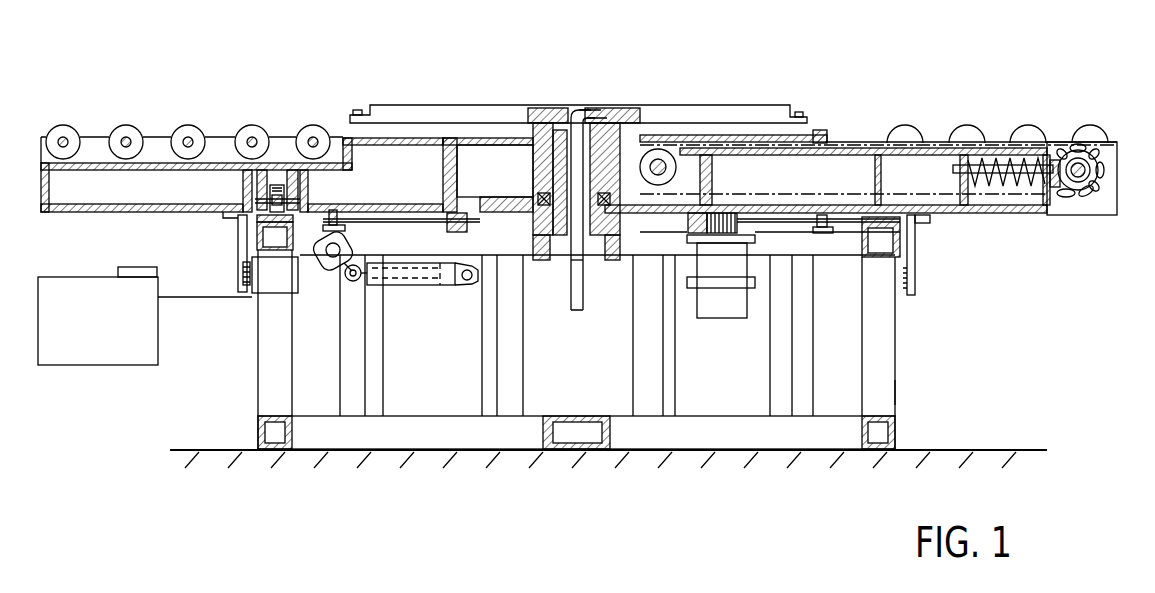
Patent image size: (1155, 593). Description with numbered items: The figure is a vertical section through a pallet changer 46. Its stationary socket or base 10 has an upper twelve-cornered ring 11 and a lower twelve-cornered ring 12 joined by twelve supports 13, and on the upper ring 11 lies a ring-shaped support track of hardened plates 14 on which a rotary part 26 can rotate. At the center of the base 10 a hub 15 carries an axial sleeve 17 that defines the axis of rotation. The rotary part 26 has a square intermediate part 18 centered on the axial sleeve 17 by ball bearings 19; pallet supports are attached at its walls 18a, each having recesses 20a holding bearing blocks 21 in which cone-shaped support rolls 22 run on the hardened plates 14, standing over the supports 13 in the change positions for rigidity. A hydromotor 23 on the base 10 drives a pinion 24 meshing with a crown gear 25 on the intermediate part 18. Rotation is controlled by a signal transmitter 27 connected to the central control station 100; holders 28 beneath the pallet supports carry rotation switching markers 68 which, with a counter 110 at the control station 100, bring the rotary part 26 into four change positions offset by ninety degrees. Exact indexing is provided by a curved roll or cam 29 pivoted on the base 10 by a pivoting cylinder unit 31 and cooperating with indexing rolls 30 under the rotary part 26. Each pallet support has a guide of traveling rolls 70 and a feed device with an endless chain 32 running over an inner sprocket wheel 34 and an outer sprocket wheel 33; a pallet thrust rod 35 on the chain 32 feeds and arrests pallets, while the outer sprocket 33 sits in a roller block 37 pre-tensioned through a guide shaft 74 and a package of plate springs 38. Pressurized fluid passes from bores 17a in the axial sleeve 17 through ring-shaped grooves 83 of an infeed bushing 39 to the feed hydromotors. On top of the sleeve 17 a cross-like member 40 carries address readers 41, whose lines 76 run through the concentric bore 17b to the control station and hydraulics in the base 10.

The socket or base 10 is at (902, 392).
The upper twelve-cornered ring 11 is at (898, 237).
The lower twelve-cornered ring 12 is at (896, 435).
The supports 13 is at (514, 361).
The hardened plates 14 is at (257, 225).
The hub 15 is at (540, 260).
The axial sleeve 17 is at (578, 107).
The bores 17a is at (560, 215).
The concentric bore 17b is at (572, 94).
The square intermediate part 18 is at (492, 139).
The walls 18a is at (442, 140).
The ball bearings 19 is at (540, 198).
The recesses 20a is at (245, 180).
The bearing blocks 21 is at (287, 181).
The cone-shaped support rolls 22 is at (274, 179).
The hydromotor 23 is at (717, 316).
The pinion 24 is at (740, 226).
The crown gear 25 is at (443, 224).
The rotary part 26 is at (1052, 226).
The signal transmitter 27 is at (265, 295).
The holders 28 is at (238, 284).
The curved roll or cam 29 is at (330, 267).
The indexing rolls 30 is at (337, 228).
The pivoting cylinder unit 31 is at (424, 279).
The endless chain 32 is at (1082, 200).
The outer sprocket wheel 33 is at (1079, 150).
The inner sprocket wheel 34 is at (660, 149).
The pallet thrust rod 35 is at (827, 129).
The roller block 37 is at (1053, 158).
The package of plate springs 38 is at (1016, 187).
The infeed bushing 39 is at (540, 108).
The cross-like member 40 is at (423, 105).
The address readers 41 is at (357, 110).
The pallet changer 46 is at (758, 79).
The rotation switching marker 68 is at (243, 264).
The traveling rolls 70 is at (120, 136).
The guide shaft 74 is at (995, 174).
The lines 76 is at (584, 283).
The ring-shaped grooves 83 is at (612, 130).
The central control station 100 is at (112, 353).
The counter 110 is at (148, 270).